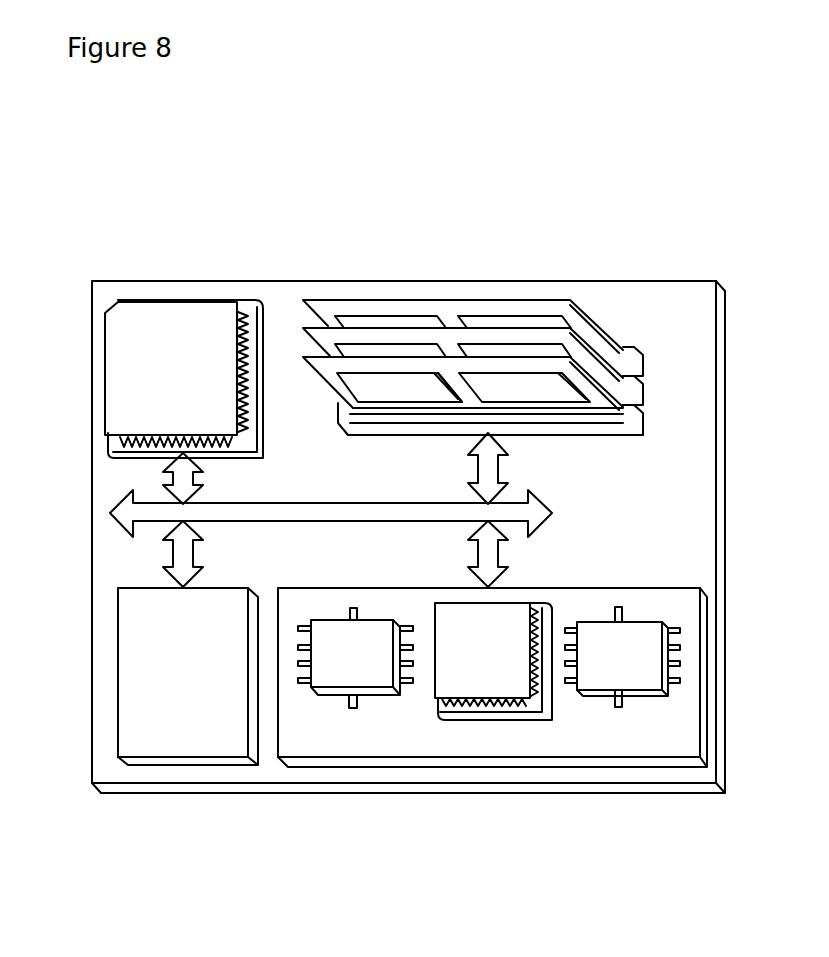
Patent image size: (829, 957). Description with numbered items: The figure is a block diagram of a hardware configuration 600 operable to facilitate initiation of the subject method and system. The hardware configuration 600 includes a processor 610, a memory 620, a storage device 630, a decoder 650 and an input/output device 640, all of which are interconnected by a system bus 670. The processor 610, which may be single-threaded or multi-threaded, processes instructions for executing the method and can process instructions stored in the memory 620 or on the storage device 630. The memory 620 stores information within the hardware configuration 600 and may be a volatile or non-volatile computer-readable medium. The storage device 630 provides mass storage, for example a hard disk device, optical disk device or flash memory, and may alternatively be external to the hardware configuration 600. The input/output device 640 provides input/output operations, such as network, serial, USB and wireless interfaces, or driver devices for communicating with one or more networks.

The hardware configuration 600 is at (300, 189).
The processor 610 is at (163, 412).
The memory 620 is at (613, 340).
The storage device 630 is at (166, 740).
The input/output device 640 is at (665, 587).
The decoder 650 is at (265, 452).
The system bus 670 is at (330, 522).